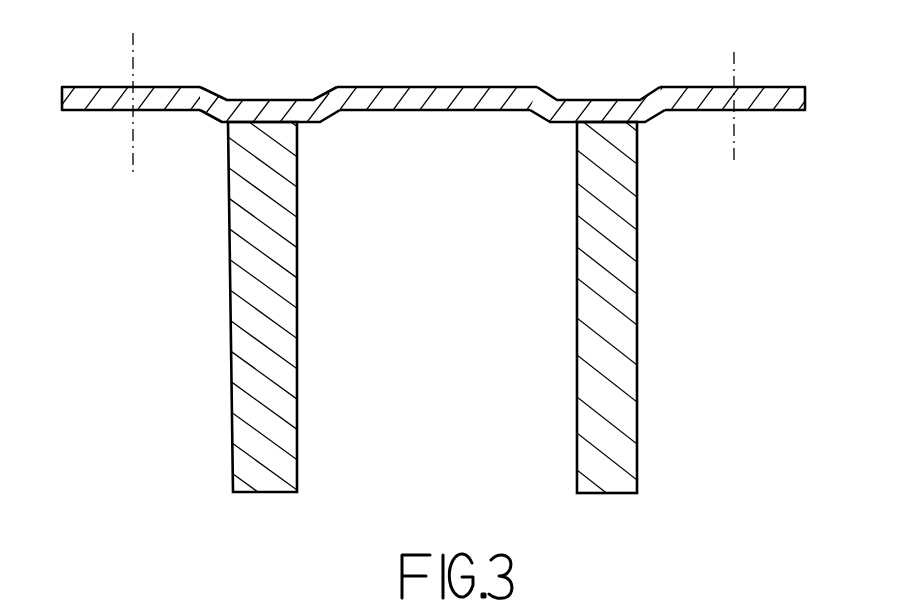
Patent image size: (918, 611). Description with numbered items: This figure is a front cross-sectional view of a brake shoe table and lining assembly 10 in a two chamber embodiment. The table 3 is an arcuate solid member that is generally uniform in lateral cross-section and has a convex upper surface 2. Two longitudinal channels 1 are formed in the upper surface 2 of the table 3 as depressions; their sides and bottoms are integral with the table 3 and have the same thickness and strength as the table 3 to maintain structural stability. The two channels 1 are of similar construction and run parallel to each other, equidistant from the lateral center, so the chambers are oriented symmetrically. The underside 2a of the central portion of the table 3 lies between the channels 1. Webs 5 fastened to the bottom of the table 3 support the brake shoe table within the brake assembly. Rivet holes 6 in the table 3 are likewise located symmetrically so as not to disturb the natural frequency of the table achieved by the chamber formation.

The longitudinal channel 1 is at (232, 92).
The upper surface 2 is at (406, 85).
The underside of central plate portion 2a is at (443, 123).
The table 3 is at (685, 118).
The web 5 is at (297, 387).
The rivet holes 6 is at (122, 85).
The fastening assembly 10 is at (136, 398).